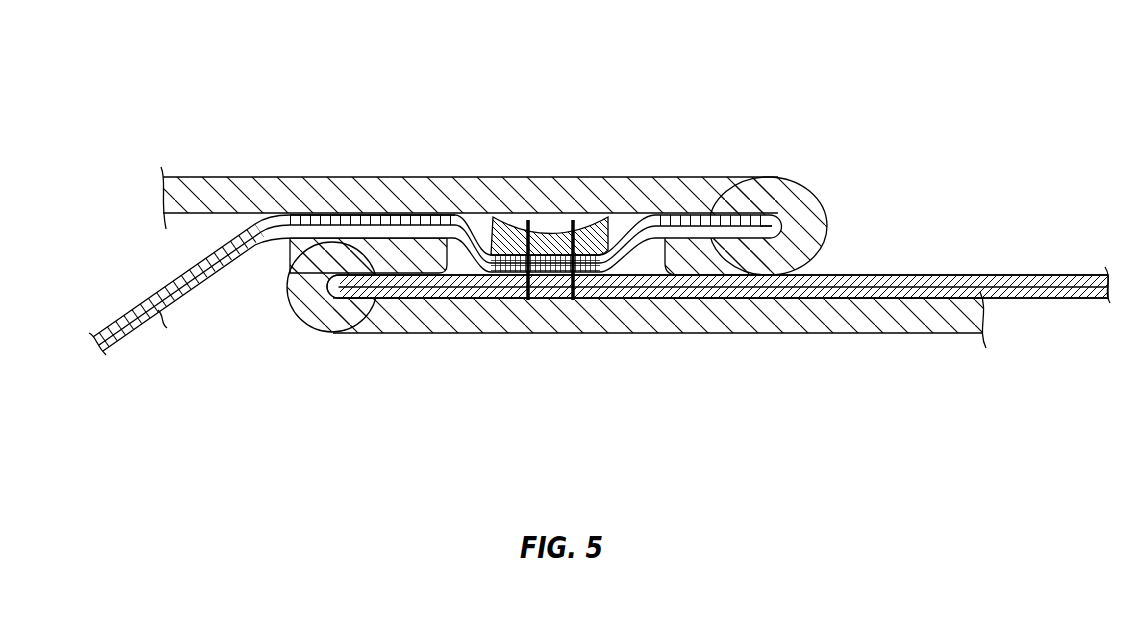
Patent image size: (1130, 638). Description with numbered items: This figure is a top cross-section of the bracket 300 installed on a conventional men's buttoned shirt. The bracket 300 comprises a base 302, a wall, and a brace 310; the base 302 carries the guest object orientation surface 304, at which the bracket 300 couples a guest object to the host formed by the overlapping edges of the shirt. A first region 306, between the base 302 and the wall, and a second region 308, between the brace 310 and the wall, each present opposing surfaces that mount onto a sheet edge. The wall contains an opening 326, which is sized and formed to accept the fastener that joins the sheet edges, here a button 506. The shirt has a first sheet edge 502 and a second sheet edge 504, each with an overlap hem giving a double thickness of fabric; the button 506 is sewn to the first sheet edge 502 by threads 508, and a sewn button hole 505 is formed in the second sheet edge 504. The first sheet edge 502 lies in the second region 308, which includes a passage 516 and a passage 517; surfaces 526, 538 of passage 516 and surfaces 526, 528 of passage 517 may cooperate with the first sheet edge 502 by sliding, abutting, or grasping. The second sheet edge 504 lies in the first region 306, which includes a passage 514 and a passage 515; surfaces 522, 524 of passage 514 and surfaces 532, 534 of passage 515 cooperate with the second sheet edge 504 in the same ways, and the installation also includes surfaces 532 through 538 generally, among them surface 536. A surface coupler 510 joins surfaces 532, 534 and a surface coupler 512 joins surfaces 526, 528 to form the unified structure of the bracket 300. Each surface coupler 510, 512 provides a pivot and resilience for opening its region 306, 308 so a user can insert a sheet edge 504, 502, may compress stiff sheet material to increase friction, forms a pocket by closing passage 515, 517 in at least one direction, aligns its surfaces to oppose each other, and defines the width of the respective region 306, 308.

The bracket 300 is at (100, 71).
The base 302 is at (205, 177).
The guest object orientation surface 304 is at (607, 177).
The first region 306 is at (157, 221).
The second region 308 is at (1002, 299).
The brace 310 is at (923, 335).
The opening 326 is at (477, 222).
The first sheet edge 502 is at (660, 336).
The second sheet edge 504 is at (757, 228).
The button hole 505 is at (513, 276).
The button 506 is at (512, 228).
The threads 508 is at (573, 232).
The surface coupler 510 is at (826, 219).
The surface coupler 512 is at (294, 265).
The passage 514 is at (297, 214).
The passage 515 is at (784, 221).
The passage 516 is at (903, 300).
The passage 517 is at (326, 288).
The surface 522 is at (362, 216).
The surface 524 is at (393, 226).
The surface 526 is at (422, 276).
The surface 528 is at (444, 274).
The surface 532 is at (702, 215).
The surface 534 is at (748, 218).
The surface 536 is at (718, 278).
The surface 538 is at (800, 292).